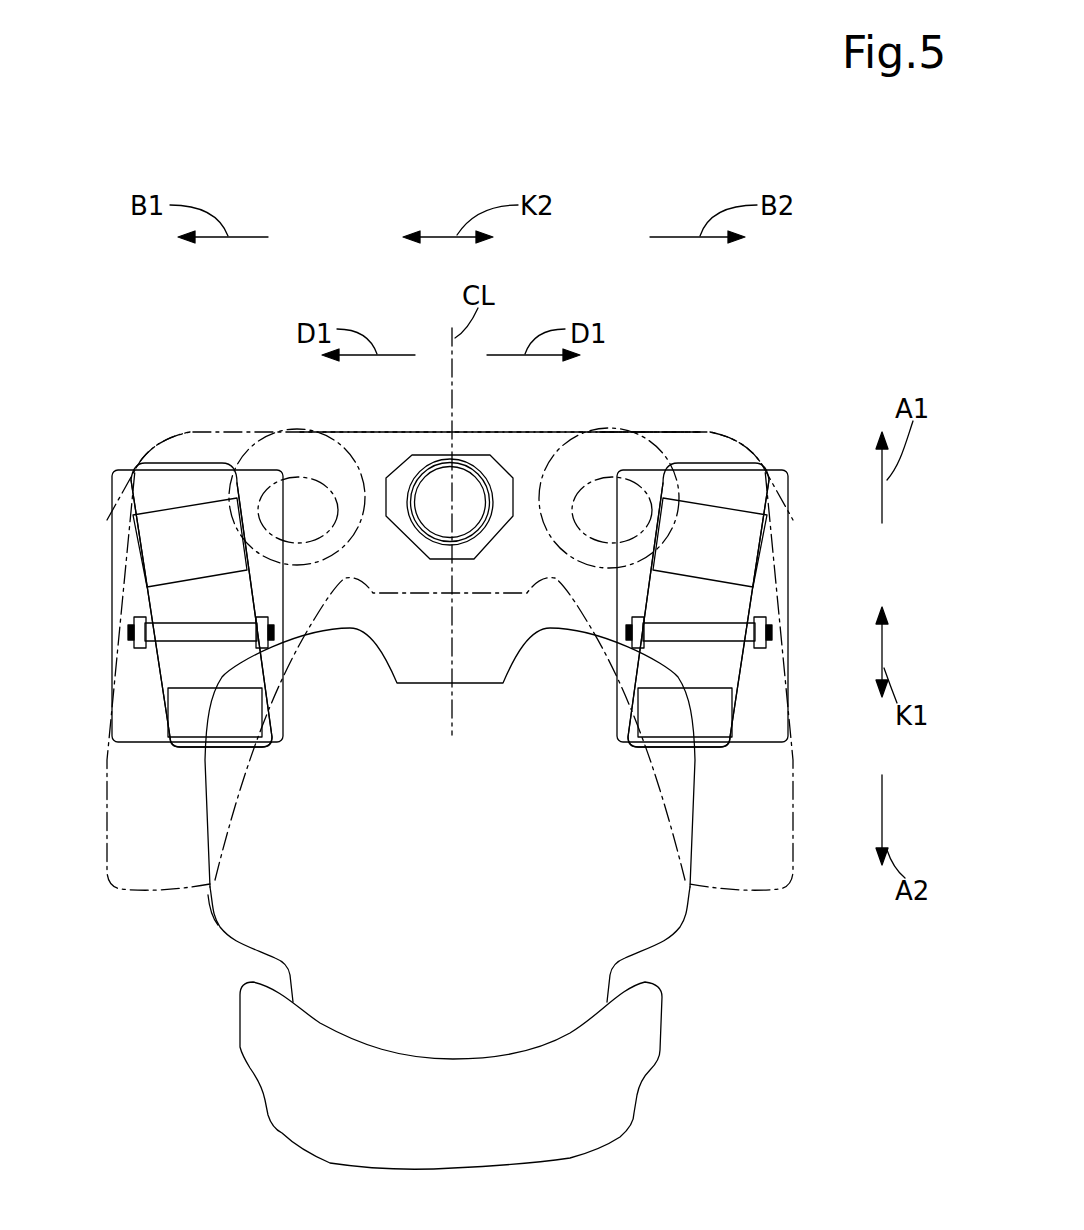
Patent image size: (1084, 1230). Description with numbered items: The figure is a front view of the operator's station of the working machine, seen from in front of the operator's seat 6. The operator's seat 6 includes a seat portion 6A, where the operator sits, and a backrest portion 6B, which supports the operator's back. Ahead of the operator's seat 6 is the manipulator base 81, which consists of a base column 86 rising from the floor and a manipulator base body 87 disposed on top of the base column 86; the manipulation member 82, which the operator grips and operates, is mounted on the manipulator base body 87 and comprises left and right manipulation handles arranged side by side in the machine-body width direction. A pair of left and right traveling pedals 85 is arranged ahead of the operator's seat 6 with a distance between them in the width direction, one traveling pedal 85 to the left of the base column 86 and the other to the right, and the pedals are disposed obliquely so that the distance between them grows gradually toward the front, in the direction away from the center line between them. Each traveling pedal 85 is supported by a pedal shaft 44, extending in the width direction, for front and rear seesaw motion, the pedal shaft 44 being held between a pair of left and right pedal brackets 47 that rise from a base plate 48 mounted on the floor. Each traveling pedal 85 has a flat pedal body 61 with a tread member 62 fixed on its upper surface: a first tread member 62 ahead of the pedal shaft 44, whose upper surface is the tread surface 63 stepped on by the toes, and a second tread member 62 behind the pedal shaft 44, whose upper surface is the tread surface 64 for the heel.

The operator's seat 6 is at (683, 932).
The seat portion 6A is at (217, 922).
The backrest portion 6B is at (635, 1107).
The pedal shaft 44 is at (172, 622).
The pedal bracket 47 is at (135, 623).
The base plate 48 is at (138, 733).
The pedal body 61 is at (158, 473).
The tread member 62 is at (738, 498).
The tread surface 63 is at (155, 553).
The tread surface 64 is at (190, 720).
The manipulator base 81 is at (680, 355).
The manipulation member 82 is at (375, 438).
The traveling pedal 85 is at (186, 455).
The base column 86 is at (475, 452).
The manipulator base body 87 is at (651, 415).